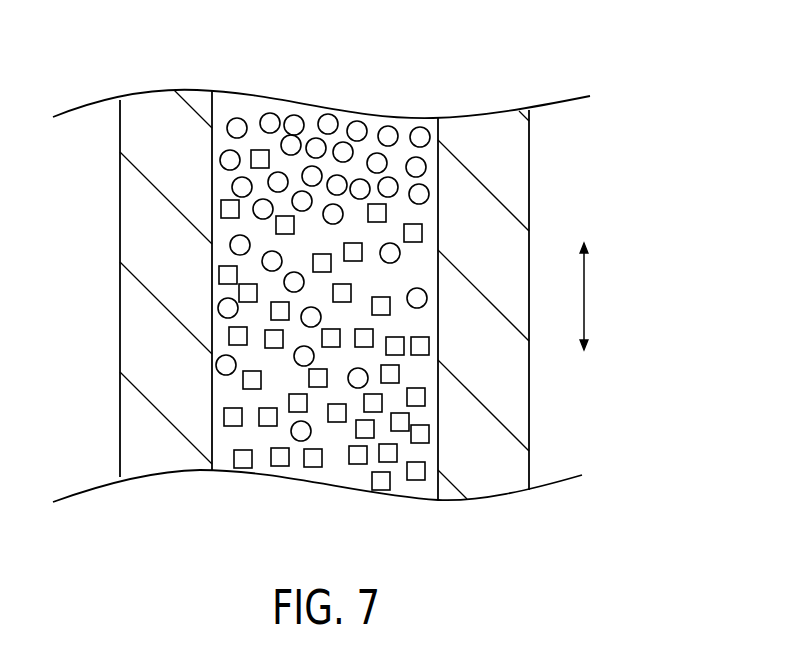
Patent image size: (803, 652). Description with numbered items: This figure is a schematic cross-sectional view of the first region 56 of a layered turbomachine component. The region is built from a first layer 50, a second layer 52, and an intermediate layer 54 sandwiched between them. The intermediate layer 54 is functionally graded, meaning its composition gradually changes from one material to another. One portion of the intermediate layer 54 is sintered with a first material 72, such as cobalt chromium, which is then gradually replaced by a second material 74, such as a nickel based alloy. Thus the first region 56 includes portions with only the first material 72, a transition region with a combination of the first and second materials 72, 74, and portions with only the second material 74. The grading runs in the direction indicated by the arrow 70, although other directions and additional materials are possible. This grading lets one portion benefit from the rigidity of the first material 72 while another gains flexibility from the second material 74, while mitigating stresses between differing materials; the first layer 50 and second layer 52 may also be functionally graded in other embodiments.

The first layer 50 is at (500, 161).
The second layer 52 is at (142, 229).
The intermediate layer 54 is at (362, 153).
The first region 56 is at (188, 59).
The arrow 70 is at (584, 297).
The first material 72 is at (237, 118).
The second material 74 is at (381, 490).